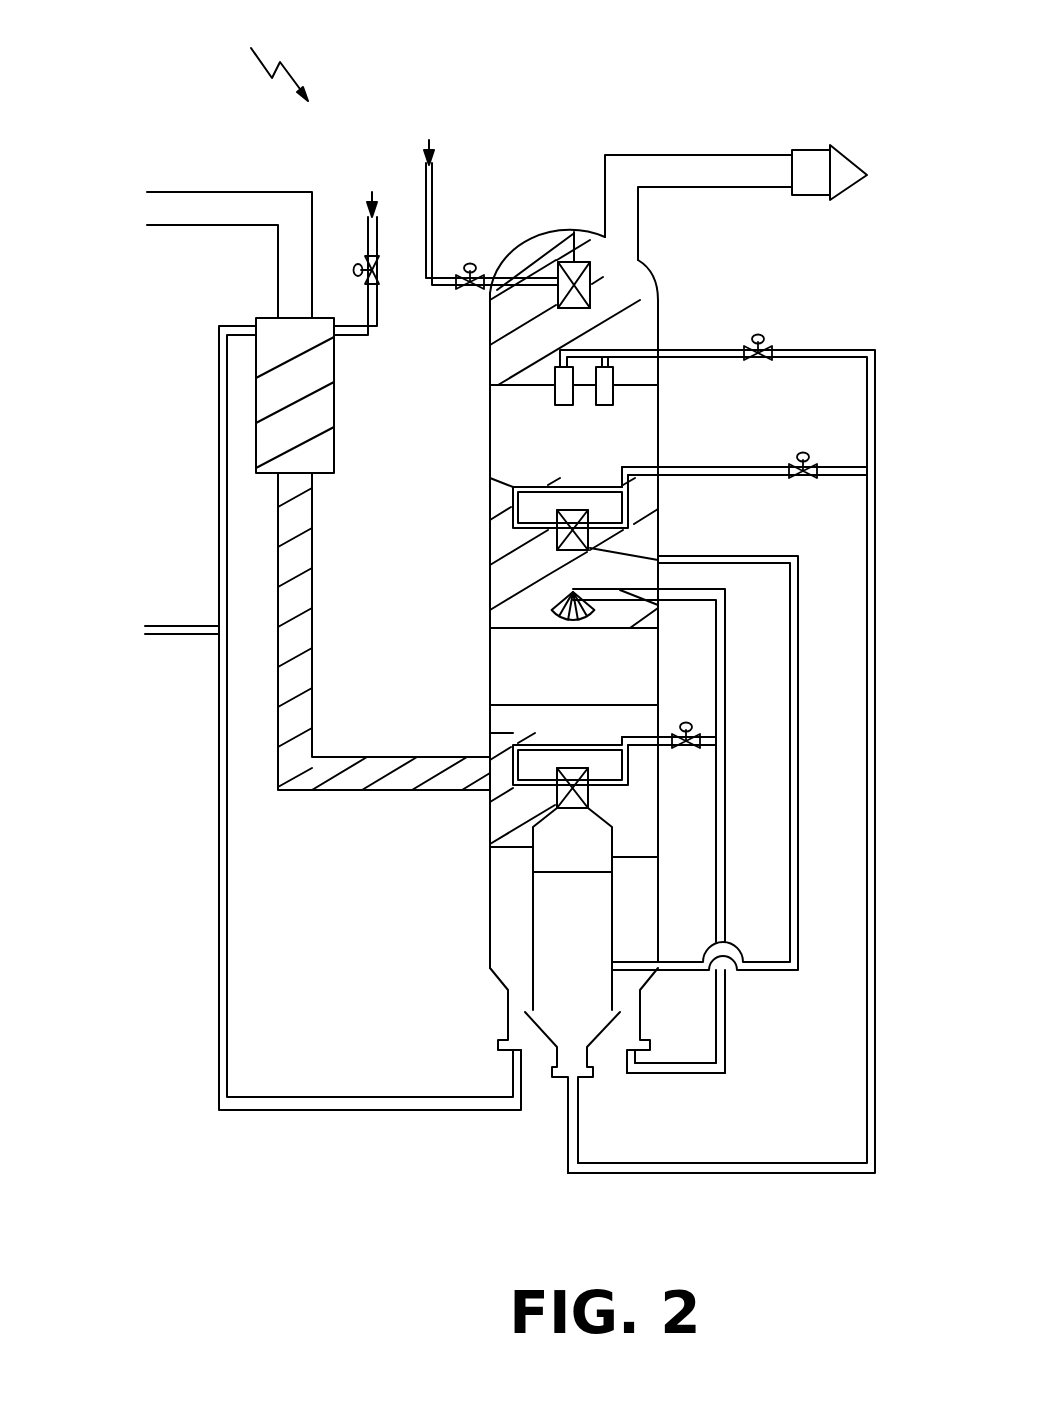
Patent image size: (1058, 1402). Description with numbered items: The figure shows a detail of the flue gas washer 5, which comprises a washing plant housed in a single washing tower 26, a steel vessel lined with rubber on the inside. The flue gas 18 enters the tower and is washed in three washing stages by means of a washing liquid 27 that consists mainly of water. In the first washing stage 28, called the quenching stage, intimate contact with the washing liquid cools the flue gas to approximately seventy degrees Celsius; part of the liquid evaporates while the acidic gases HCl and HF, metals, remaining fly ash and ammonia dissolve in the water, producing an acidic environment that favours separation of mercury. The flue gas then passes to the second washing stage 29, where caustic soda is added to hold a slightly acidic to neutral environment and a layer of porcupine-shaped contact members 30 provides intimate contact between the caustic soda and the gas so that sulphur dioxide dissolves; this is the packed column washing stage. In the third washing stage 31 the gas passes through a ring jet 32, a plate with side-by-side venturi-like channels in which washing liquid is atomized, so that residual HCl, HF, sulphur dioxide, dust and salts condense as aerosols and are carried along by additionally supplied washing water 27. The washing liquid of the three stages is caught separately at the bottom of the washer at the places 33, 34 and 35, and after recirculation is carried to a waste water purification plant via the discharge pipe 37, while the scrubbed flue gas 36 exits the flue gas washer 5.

The flue gas washer 5 is at (240, 38).
The flue gas 18 is at (155, 208).
The washing tower 26 is at (508, 432).
The washing liquid 27 is at (429, 150).
The first washing stage 28 is at (328, 406).
The second washing stage 29 is at (497, 560).
The porcupine-shaped contact members 30 is at (507, 664).
The third washing stage 31 is at (637, 283).
The ring jet 32 is at (513, 340).
The washing liquid collection place of first washing stage 33 is at (507, 910).
The washing liquid collection place of second washing stage 34 is at (633, 913).
The washing liquid collection place of third washing stage 35 is at (570, 975).
The scrubbed flue gas 36 is at (760, 165).
The discharge pipe 37 is at (145, 630).